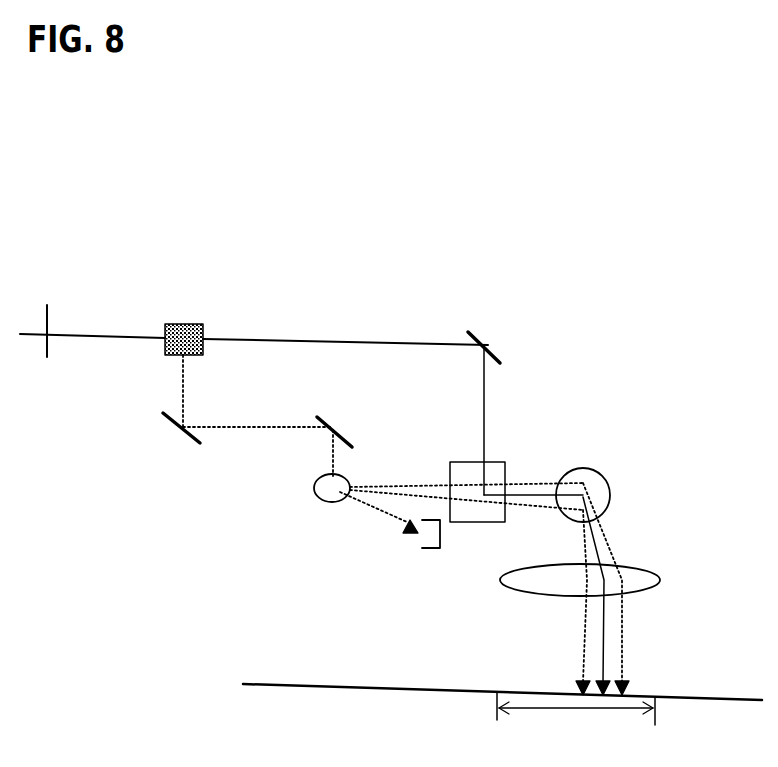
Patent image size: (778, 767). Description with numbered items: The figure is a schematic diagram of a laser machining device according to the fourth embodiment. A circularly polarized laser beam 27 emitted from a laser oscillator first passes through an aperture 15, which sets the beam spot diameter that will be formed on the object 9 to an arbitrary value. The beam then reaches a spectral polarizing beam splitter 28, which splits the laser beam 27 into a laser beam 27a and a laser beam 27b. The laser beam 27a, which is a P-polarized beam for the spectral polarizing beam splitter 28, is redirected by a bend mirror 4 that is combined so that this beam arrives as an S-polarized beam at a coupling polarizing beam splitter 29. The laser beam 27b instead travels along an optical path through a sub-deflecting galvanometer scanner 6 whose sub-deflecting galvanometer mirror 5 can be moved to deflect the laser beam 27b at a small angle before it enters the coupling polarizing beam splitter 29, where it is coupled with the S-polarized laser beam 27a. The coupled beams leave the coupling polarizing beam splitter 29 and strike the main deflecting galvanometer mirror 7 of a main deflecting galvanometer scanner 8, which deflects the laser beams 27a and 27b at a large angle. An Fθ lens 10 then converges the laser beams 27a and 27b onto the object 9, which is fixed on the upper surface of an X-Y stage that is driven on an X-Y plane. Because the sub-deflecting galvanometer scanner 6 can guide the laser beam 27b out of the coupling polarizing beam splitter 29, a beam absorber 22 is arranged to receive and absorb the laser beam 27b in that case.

The bend mirror 4 is at (188, 438).
The sub-deflecting galvanometer mirror 5 is at (314, 492).
The sub-deflecting galvanometer scanner 6 is at (322, 500).
The main deflecting galvanometer mirror 7 is at (599, 470).
The main deflecting galvanometer scanner 8 is at (608, 488).
The object 9 is at (455, 690).
The Fθ lens 10 is at (640, 572).
The aperture 15 is at (47, 360).
The beam absorber 22 is at (430, 548).
The laser beam 27 is at (78, 335).
The laser beam 27a is at (252, 338).
The laser beam 27b is at (263, 430).
The spectral polarizing beam splitter 28 is at (200, 325).
The coupling polarizing beam splitter 29 is at (507, 462).